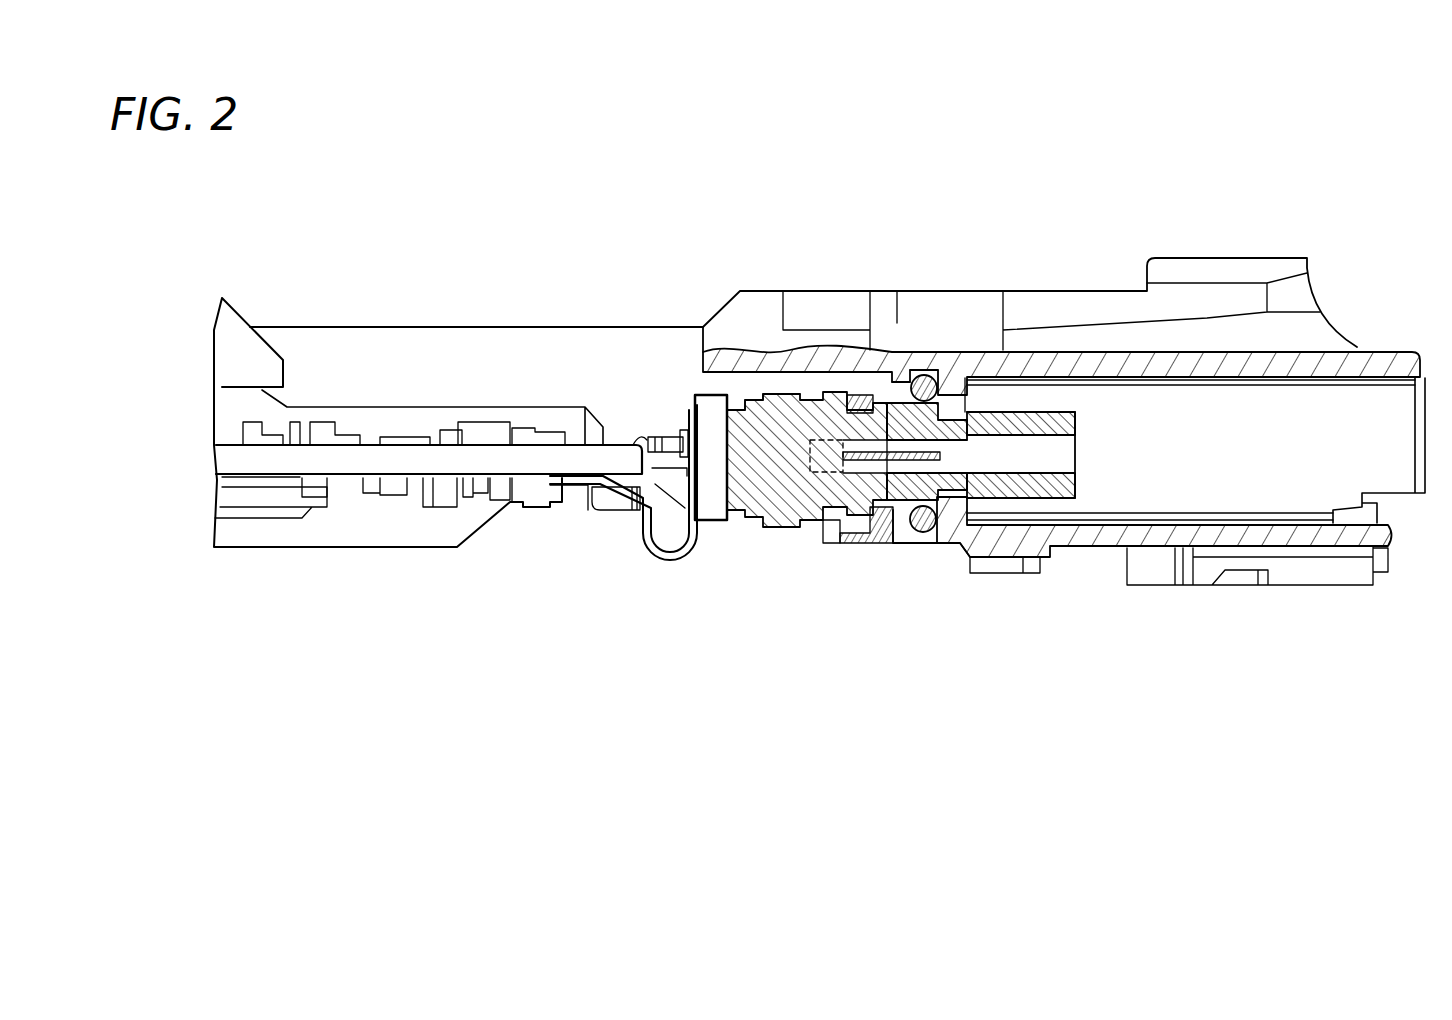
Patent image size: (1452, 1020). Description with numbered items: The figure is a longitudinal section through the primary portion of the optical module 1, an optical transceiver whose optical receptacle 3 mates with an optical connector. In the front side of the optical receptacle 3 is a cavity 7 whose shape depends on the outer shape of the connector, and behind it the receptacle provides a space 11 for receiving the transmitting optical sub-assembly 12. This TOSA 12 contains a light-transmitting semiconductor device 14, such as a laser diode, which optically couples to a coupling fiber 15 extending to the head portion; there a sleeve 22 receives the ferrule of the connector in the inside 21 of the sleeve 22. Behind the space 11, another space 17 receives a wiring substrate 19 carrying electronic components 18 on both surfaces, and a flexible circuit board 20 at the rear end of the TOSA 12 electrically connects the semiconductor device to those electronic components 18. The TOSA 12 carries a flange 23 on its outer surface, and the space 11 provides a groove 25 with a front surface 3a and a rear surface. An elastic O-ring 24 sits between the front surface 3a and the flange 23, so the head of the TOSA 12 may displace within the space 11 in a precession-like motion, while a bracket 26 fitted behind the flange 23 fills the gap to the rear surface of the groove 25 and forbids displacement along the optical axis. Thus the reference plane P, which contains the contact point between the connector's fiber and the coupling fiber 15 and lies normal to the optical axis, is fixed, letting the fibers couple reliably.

The optical module 1 is at (646, 172).
The optical receptacle 3 is at (1057, 302).
The front surface 3a is at (922, 375).
The cavity 7 is at (1332, 420).
The space 11 is at (810, 380).
The transmitting optical sub-assembly 12 is at (805, 525).
The light-transmitting semiconductor device 14 is at (768, 522).
The coupling fiber 15 is at (770, 380).
The space 17 is at (512, 380).
The electronic components 18 is at (483, 432).
The wiring substrate 19 is at (357, 456).
The flexible circuit board 20 is at (660, 552).
The inside of the sleeve 21 is at (1065, 457).
The sleeve 22 is at (1033, 470).
The flange 23 is at (903, 540).
The O-ring 24 is at (922, 542).
The groove 25 is at (910, 382).
The bracket 26 is at (880, 540).
The reference plane P is at (978, 540).